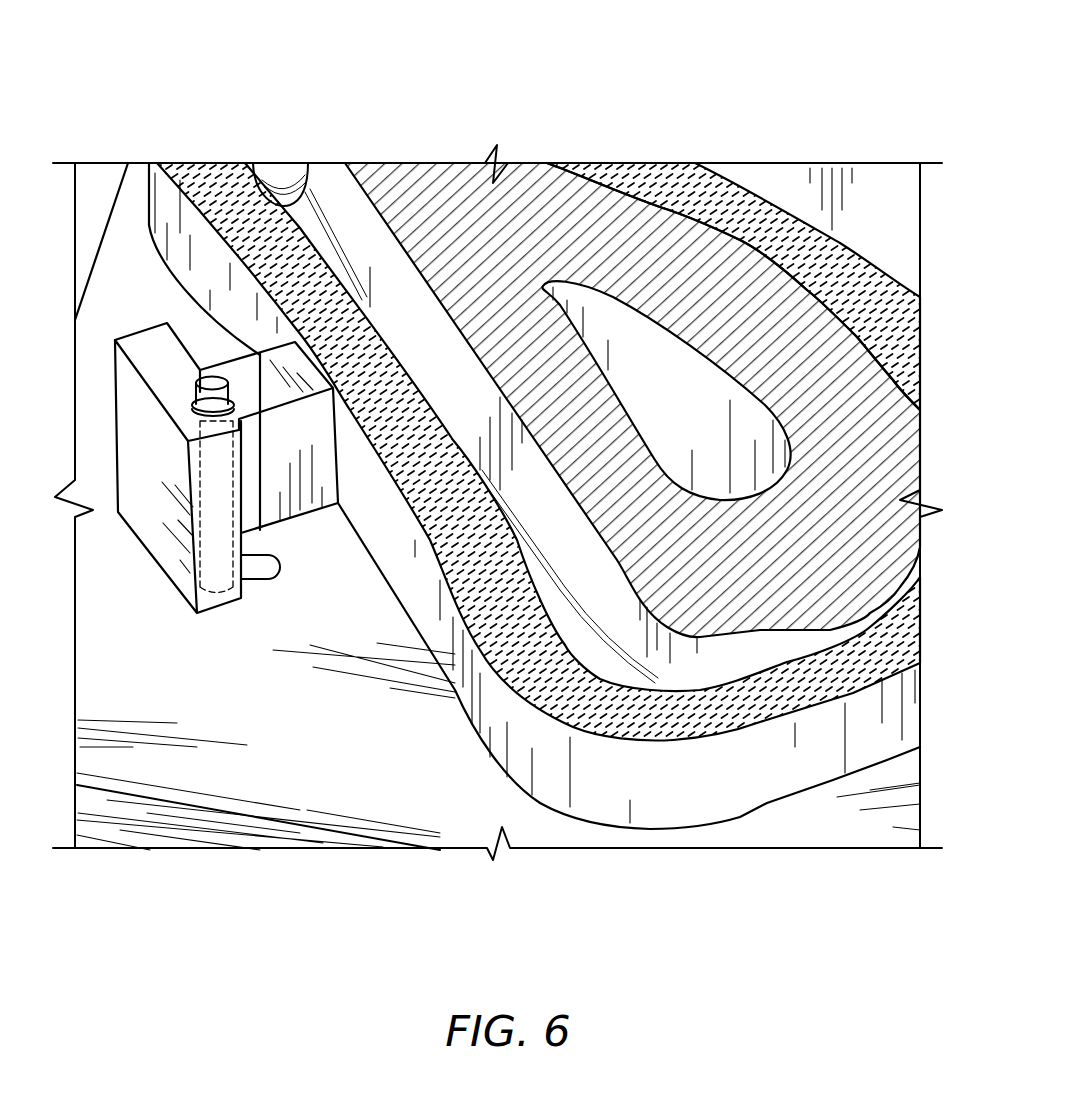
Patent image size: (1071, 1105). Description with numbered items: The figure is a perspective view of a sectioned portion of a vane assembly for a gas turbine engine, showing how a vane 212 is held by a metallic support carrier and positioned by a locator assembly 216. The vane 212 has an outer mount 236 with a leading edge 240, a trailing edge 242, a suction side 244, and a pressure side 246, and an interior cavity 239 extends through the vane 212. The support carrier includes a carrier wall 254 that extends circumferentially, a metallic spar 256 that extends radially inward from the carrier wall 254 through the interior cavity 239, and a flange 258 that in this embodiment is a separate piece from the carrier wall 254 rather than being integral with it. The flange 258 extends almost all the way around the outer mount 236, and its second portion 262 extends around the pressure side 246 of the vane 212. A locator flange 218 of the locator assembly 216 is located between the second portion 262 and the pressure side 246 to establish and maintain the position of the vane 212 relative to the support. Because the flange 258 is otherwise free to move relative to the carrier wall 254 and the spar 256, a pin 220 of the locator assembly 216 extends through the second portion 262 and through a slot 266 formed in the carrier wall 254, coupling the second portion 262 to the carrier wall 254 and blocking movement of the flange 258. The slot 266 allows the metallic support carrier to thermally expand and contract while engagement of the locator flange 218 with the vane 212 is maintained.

The vane 212 is at (885, 150).
The locator assembly 216 is at (78, 277).
The locator flange 218 is at (249, 370).
The pin 220 is at (178, 397).
The outer mount 236 is at (813, 815).
The interior cavity 239 is at (658, 666).
The leading edge 240 is at (863, 763).
The trailing edge 242 is at (148, 193).
The suction side 244 is at (775, 198).
The pressure side 246 is at (400, 532).
The carrier wall 254 is at (390, 774).
The metallic spar 256 is at (522, 203).
The flange 258 is at (133, 693).
The second portion of the flange 262 is at (153, 516).
The slot 266 is at (288, 564).